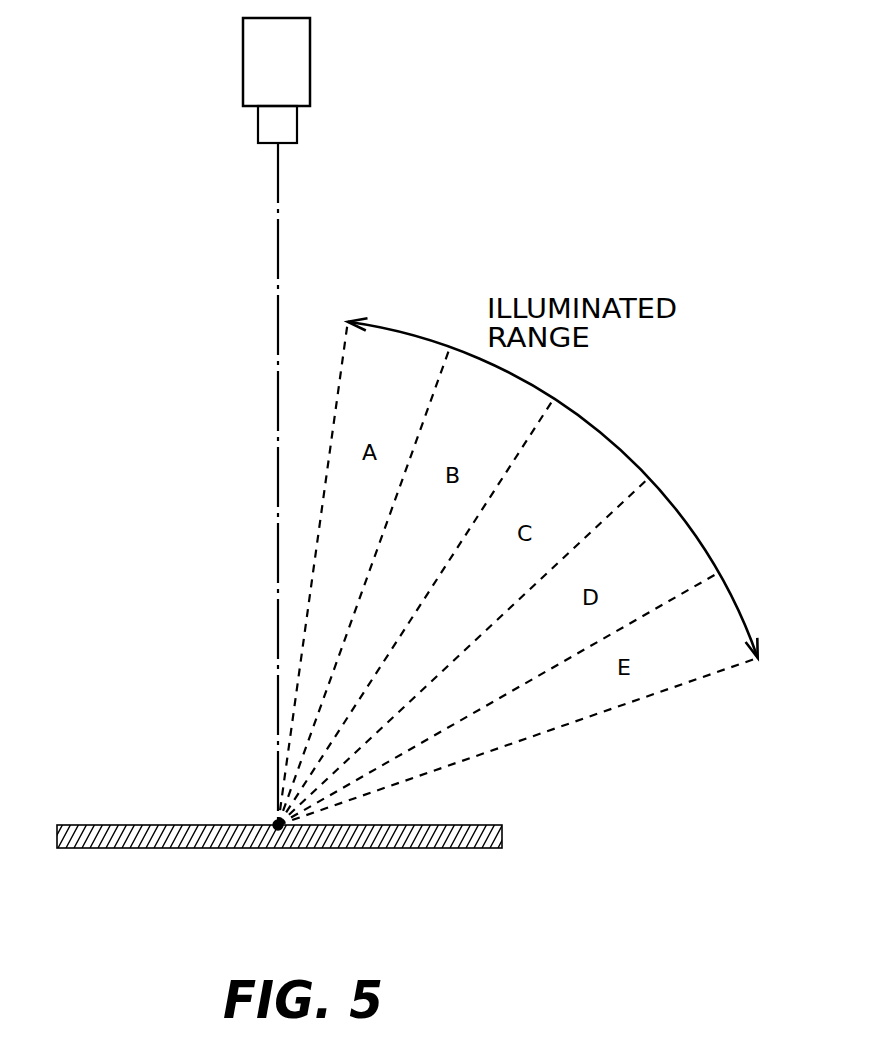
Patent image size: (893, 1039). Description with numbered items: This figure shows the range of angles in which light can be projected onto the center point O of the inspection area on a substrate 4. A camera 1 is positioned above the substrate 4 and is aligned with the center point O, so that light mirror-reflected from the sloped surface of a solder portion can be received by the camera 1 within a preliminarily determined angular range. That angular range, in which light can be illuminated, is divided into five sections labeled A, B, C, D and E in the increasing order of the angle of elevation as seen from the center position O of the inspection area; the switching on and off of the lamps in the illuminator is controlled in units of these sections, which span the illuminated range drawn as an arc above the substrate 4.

The camera 1 is at (310, 50).
The substrate 4 is at (98, 825).
The center point of the inspection area O is at (282, 830).